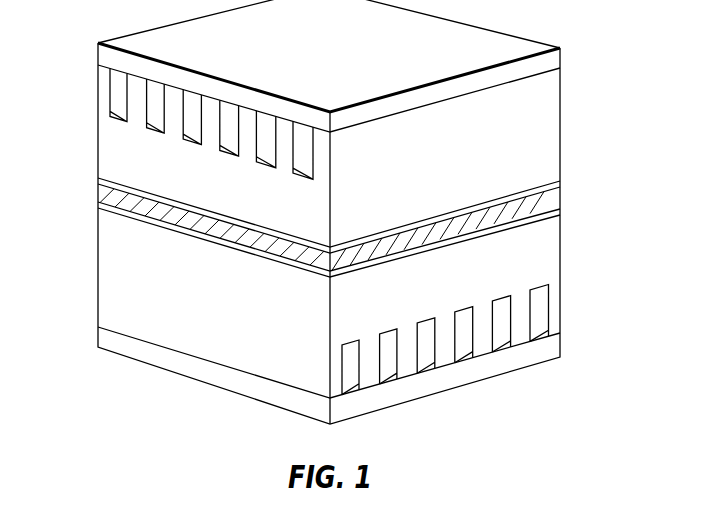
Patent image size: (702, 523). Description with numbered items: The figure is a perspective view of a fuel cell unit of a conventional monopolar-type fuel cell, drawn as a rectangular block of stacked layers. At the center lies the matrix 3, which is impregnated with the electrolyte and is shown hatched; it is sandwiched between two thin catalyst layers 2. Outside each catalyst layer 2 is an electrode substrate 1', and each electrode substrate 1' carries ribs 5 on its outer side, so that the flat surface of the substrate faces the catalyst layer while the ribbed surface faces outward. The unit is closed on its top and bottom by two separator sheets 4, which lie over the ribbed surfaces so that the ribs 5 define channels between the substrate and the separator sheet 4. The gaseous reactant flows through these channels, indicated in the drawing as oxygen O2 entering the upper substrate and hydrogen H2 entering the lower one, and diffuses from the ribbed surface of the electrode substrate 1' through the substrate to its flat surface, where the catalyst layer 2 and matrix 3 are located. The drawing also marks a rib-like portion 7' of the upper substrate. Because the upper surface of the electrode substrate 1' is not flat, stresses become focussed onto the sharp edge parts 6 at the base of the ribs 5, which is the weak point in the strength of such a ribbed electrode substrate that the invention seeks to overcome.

The electrode substrate 1' is at (348, 231).
The catalyst layer 2 is at (553, 183).
The matrix 3 is at (555, 201).
The separator sheet 4 is at (556, 63).
The rib 5 is at (210, 105).
The sharp edge part 6 is at (112, 128).
The rib between grooves 7' is at (150, 84).
The oxygen gas flow O2 is at (147, 134).
The hydrogen gas flow H2 is at (467, 365).